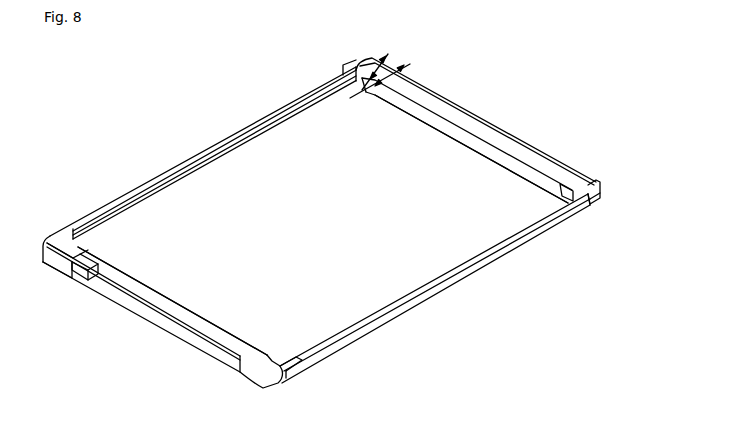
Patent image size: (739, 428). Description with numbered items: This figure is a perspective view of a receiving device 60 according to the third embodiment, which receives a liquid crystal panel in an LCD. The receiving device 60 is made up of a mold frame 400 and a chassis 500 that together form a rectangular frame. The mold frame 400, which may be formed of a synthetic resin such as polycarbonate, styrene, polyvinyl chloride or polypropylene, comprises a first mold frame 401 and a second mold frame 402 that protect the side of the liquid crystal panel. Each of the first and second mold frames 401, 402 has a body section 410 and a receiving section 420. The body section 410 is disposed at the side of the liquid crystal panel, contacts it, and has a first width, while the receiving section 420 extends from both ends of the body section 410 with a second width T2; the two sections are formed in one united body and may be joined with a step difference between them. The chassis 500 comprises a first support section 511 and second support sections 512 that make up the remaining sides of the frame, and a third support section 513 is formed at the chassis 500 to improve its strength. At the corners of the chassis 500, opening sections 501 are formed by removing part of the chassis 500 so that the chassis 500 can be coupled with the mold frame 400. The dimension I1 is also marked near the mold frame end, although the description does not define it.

The chassis 500 is at (163, 163).
The first support section 511 is at (301, 134).
The second support sections 512 is at (193, 341).
The third support section 513 is at (94, 234).
The receiving device 60 is at (508, 114).
The body section 410 is at (530, 152).
The receiving section 420 is at (594, 184).
The opening sections 501 is at (604, 198).
The mold frame 400 is at (323, 212).
The first mold frame 401 is at (478, 155).
The second mold frame 402 is at (218, 314).
The second width T2 is at (385, 64).
The length I1 is at (388, 72).